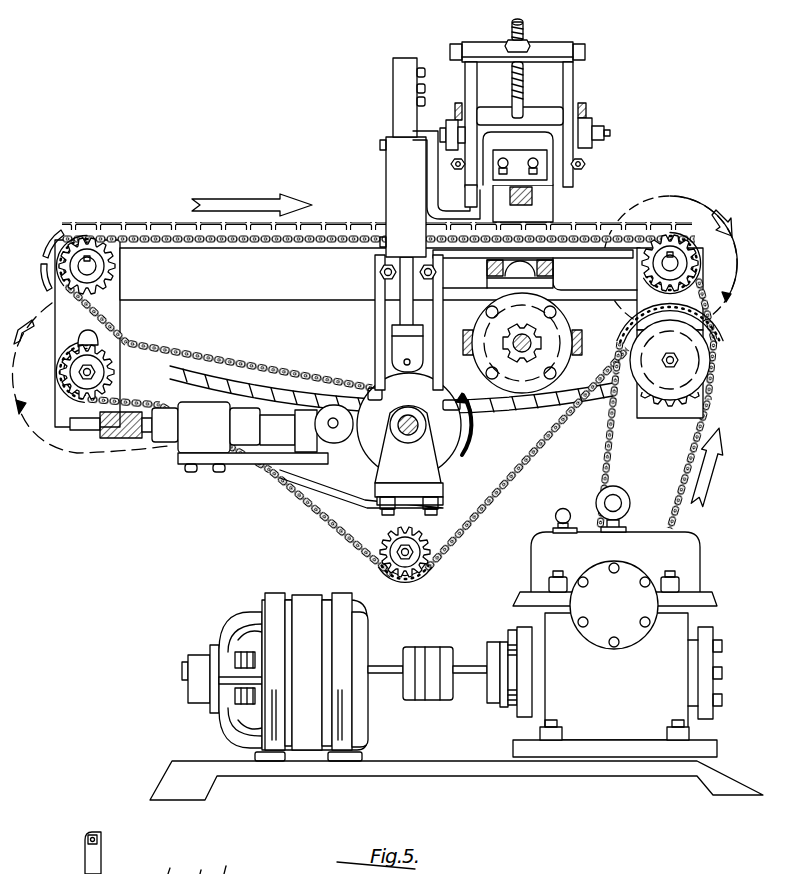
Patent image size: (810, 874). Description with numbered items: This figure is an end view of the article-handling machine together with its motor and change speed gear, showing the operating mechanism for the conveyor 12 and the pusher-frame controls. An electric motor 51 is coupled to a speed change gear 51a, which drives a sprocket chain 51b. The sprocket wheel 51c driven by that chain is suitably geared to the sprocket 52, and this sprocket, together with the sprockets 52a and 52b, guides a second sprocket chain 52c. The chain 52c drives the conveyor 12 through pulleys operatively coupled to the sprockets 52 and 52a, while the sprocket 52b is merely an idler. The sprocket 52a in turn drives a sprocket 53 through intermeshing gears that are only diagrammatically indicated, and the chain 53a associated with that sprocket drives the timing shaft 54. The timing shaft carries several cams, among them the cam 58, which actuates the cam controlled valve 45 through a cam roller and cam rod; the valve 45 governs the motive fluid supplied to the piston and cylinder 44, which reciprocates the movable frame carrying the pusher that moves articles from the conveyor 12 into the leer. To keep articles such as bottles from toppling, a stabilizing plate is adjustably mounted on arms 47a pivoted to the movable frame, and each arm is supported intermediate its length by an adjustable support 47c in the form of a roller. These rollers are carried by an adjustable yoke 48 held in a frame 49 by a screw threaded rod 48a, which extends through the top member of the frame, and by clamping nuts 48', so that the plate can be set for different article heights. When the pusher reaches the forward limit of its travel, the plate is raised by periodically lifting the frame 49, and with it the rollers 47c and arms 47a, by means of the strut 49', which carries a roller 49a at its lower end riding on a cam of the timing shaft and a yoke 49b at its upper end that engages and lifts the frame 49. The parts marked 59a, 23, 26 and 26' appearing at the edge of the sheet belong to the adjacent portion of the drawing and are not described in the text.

The conveyor 12 is at (315, 226).
The piston and cylinder 44 is at (550, 333).
The cam controlled valve 45 is at (190, 448).
The arms 47a is at (458, 103).
The adjustable support 47c is at (452, 119).
The adjustable yoke 48 is at (520, 143).
The clamping nuts 48' is at (553, 61).
The screw threaded rod 48a is at (518, 26).
The frame 49 is at (540, 117).
The strut 49' is at (382, 322).
The roller 49a is at (390, 353).
The yoke 49b is at (422, 90).
The electric motor 51 is at (307, 752).
The speed change gear 51a is at (608, 735).
The sprocket chain 51b is at (707, 424).
The sprocket wheel 51c is at (710, 350).
The sprocket 52 is at (667, 258).
The sprocket 52a is at (97, 255).
The sprocket 52b is at (366, 552).
The second sprocket chain 52c is at (478, 518).
The sprocket 53 is at (83, 383).
The chain 53a is at (228, 366).
The timing shaft 54 is at (398, 432).
The cam 58 is at (455, 423).
The guide 59a is at (101, 857).
The bar 23 is at (169, 862).
The roller 26 is at (202, 861).
The roller 26' is at (229, 859).